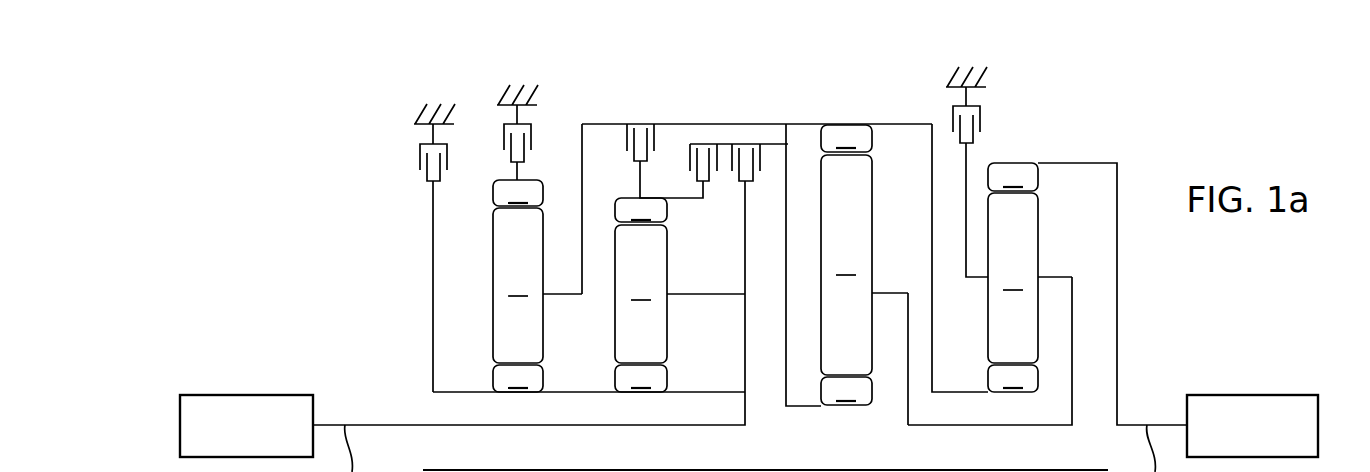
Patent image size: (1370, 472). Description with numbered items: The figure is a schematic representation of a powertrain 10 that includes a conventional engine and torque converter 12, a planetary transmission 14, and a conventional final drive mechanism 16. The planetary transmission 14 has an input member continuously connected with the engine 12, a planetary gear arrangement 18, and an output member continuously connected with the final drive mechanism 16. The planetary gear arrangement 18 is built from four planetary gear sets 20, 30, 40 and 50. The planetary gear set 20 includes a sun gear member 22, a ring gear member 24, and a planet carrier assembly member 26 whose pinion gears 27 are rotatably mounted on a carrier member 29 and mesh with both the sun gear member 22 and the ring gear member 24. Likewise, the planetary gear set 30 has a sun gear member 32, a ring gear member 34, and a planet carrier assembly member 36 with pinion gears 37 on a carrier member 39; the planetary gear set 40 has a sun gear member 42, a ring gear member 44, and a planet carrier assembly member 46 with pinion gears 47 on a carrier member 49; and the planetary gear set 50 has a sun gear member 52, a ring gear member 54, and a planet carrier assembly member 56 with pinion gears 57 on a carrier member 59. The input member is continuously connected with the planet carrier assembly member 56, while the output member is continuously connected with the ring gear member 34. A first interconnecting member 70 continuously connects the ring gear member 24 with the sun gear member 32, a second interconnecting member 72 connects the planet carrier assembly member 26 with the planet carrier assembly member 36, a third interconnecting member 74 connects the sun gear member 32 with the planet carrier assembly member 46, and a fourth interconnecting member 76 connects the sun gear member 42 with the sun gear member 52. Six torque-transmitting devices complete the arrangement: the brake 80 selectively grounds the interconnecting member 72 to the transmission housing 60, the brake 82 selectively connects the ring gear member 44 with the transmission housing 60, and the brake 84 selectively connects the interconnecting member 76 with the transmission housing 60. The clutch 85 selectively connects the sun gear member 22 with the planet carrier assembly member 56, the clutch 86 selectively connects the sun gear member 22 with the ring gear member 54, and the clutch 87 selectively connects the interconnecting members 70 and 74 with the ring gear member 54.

The powertrain 10 is at (715, 71).
The engine and torque converter 12 is at (235, 377).
The planetary transmission 14 is at (820, 74).
The final drive mechanism 16 is at (1265, 379).
The planetary gear arrangement 18 is at (910, 75).
The planetary gear set 20 is at (828, 294).
The sun gear member 22 is at (839, 414).
The ring gear member 24 is at (846, 138).
The planet carrier assembly member 26 is at (878, 279).
The pinion gears 27 is at (846, 265).
The carrier member 29 is at (888, 291).
The planetary gear set 30 is at (1032, 313).
The sun gear member 32 is at (1017, 402).
The ring gear member 34 is at (1013, 177).
The planet carrier assembly member 36 is at (1047, 260).
The pinion gears 37 is at (1013, 278).
The carrier member 39 is at (1055, 276).
The planetary gear set 40 is at (496, 322).
The sun gear member 42 is at (513, 400).
The ring gear member 44 is at (518, 193).
The planet carrier assembly member 46 is at (552, 309).
The pinion gears 47 is at (518, 285).
The carrier member 49 is at (562, 296).
The planetary gear set 50 is at (655, 331).
The sun gear member 52 is at (633, 404).
The ring gear member 54 is at (641, 210).
The planet carrier assembly member 56 is at (678, 282).
The pinion gears 57 is at (641, 294).
The carrier member 59 is at (684, 293).
The transmission housing 60 is at (444, 102).
The first interconnecting member 70 is at (897, 126).
The second interconnecting member 72 is at (978, 427).
The third interconnecting member 74 is at (583, 203).
The fourth interconnecting member 76 is at (575, 393).
The brake 80 is at (996, 121).
The brake 82 is at (542, 143).
The brake 84 is at (408, 163).
The clutch 85 is at (774, 156).
The clutch 86 is at (686, 156).
The clutch 87 is at (614, 137).